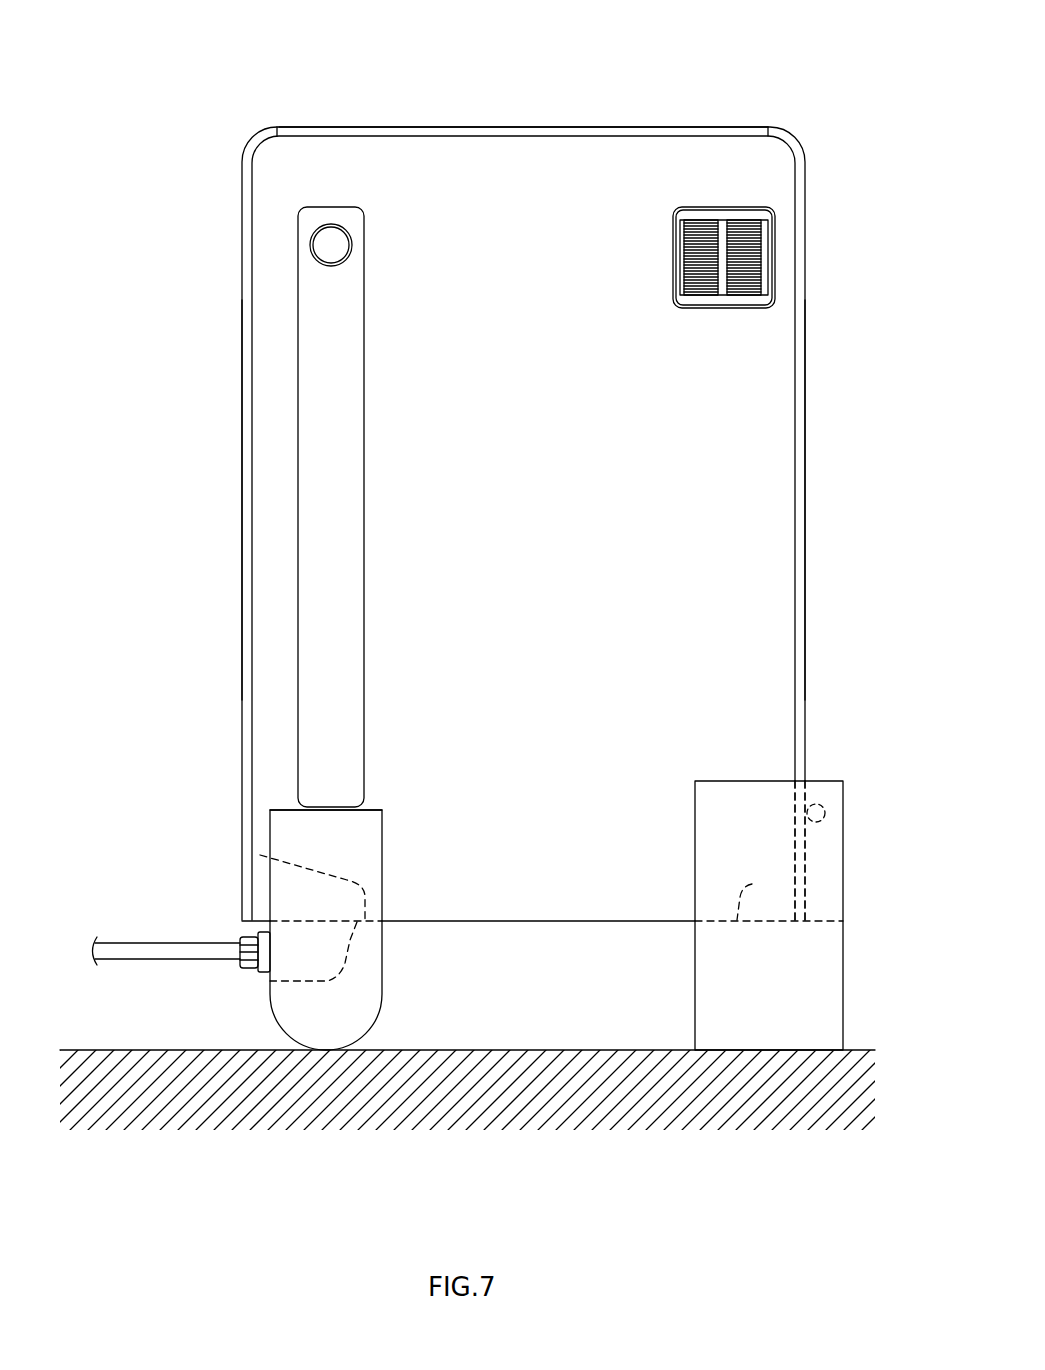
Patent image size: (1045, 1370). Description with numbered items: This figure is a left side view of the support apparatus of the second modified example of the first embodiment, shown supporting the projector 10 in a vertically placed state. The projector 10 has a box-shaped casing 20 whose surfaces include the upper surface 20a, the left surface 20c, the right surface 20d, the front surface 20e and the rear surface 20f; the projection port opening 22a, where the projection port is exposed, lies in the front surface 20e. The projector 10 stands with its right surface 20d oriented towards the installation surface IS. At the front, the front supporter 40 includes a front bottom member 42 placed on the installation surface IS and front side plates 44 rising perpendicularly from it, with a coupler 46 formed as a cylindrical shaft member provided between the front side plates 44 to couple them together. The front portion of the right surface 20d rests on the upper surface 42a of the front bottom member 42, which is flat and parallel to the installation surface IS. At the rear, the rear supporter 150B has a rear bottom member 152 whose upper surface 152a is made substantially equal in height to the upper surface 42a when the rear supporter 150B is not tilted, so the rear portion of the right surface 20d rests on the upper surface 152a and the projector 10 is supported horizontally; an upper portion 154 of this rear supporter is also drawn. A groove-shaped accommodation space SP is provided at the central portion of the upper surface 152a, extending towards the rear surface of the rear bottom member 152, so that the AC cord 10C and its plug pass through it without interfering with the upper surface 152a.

The projector 10 is at (277, 100).
The casing 20 is at (755, 127).
The upper surface 20a is at (463, 470).
The left surface 20c is at (494, 127).
The right surface 20d is at (478, 925).
The front surface 20e is at (806, 492).
The rear surface 20f is at (241, 568).
The projection port opening 22a is at (814, 227).
The rear supporter 150B is at (344, 1062).
The rear bottom member 152 is at (327, 1023).
The upper surface of rear bottom member 152a is at (260, 855).
The leg upper portion 154 is at (323, 842).
The accommodation space SP is at (306, 945).
The AC cord 10C is at (132, 942).
The front supporter 40 is at (760, 1062).
The front bottom member 42 is at (740, 1001).
The front side plates 44 is at (740, 844).
The coupler 46 is at (826, 806).
The upper surface of front bottom member 42a is at (752, 884).
The installation surface IS is at (556, 1046).